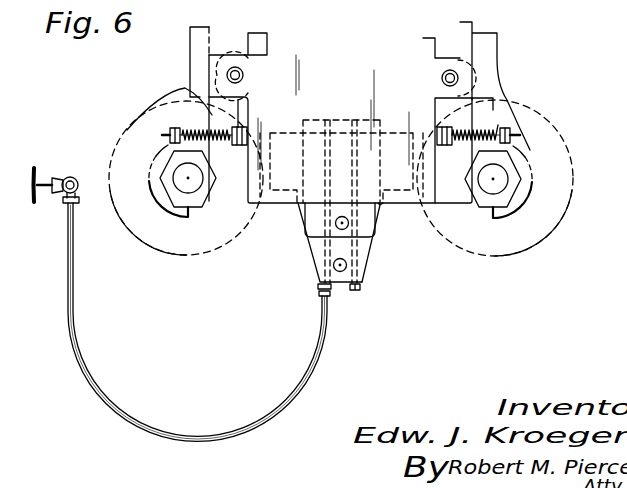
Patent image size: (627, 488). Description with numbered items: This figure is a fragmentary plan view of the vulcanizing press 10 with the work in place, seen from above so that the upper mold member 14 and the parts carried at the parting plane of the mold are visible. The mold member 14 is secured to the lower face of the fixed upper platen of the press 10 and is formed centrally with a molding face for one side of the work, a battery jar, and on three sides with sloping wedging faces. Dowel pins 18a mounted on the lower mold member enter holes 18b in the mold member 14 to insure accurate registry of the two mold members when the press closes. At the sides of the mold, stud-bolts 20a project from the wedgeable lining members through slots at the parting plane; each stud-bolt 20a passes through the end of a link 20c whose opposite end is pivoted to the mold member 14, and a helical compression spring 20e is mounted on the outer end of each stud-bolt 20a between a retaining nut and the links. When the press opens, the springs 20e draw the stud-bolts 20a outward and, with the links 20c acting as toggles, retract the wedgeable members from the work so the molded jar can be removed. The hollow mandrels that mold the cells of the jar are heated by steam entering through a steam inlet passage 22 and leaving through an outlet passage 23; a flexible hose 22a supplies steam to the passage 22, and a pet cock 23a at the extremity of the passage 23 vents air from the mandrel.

The press 10 is at (573, 190).
The mold member 14 is at (278, 206).
The dowel pins 18a is at (243, 81).
The holes 18b is at (242, 71).
The stud-bolts 20a is at (165, 135).
The links 20c is at (447, 147).
The helical compression springs 20e is at (232, 128).
The steam inlet passage 22 is at (324, 247).
The flexible hose 22a is at (84, 365).
The outlet passage 23 is at (373, 257).
The pet cock 23a is at (357, 290).